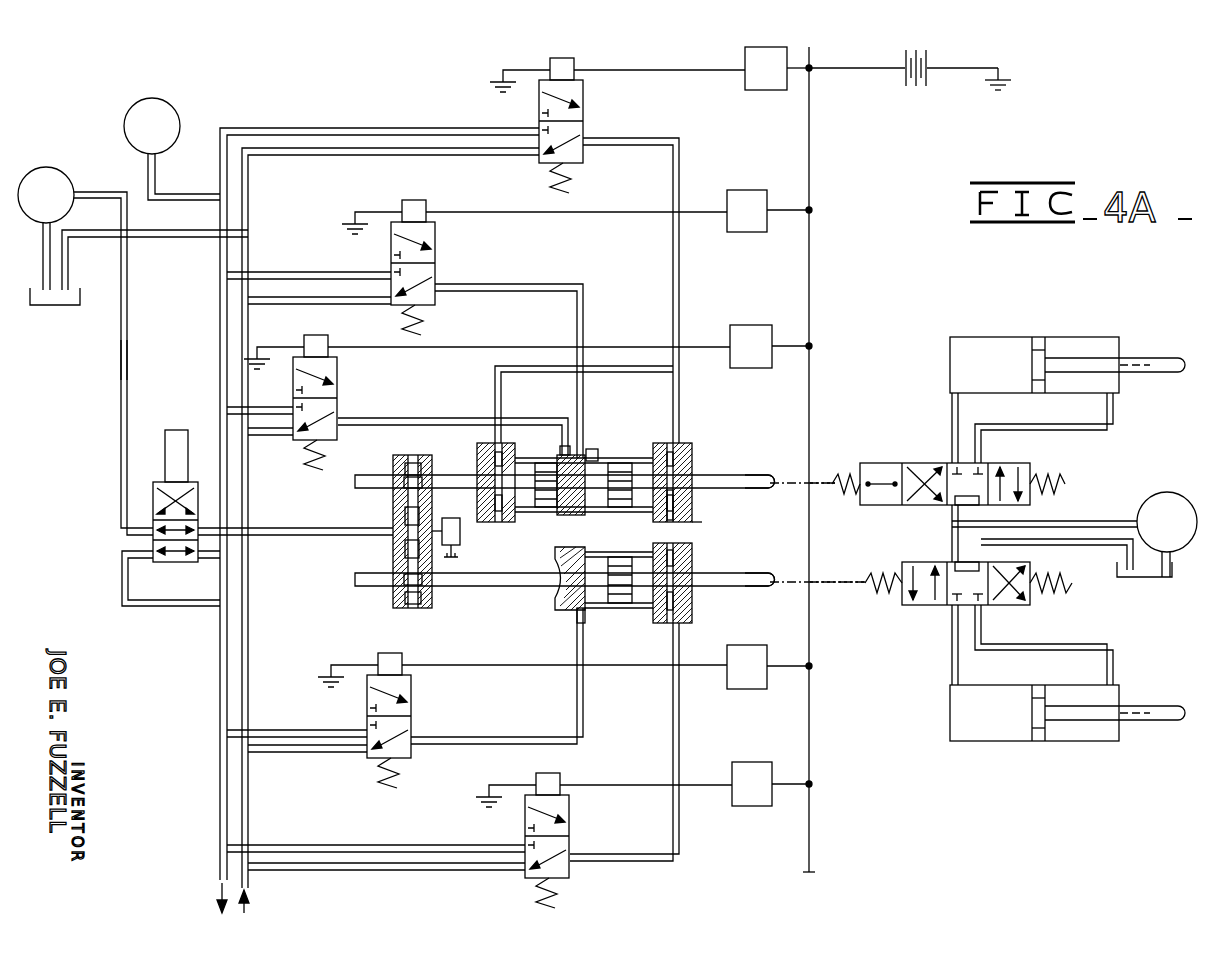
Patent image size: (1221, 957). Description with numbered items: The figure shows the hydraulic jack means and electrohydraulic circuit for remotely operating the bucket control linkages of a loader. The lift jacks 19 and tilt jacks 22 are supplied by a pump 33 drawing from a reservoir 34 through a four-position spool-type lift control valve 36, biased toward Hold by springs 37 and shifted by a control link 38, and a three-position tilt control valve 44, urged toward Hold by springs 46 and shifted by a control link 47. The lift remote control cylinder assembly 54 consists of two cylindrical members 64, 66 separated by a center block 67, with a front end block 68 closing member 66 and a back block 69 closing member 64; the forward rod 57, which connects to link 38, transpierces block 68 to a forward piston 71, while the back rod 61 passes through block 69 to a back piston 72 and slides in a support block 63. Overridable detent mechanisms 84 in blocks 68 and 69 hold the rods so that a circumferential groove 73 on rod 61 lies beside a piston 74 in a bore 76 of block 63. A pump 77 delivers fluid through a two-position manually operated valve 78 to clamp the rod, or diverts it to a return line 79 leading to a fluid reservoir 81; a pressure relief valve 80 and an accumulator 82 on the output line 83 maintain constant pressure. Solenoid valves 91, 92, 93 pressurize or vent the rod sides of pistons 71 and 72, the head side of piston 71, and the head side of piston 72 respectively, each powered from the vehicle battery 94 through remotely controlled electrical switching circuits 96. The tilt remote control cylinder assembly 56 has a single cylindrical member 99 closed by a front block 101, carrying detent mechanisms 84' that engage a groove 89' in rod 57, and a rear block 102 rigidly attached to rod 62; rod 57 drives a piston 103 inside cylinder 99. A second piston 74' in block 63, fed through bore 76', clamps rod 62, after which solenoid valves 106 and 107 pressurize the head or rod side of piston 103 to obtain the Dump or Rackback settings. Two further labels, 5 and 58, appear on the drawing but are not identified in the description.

The upper valve assembly 5 is at (695, 448).
The lift jacks 19 is at (985, 338).
The tilt jacks 22 is at (1000, 742).
The pump 33 is at (1165, 493).
The reservoir 34 is at (1158, 578).
The lift control valve 36 is at (912, 445).
The springs 37 is at (848, 500).
The control link 38 is at (814, 478).
The tilt control valve 44 is at (935, 612).
The springs 46 is at (873, 595).
The control link 47 is at (820, 578).
The lift remote control cylinder assembly 54 is at (704, 530).
The remote control cylinder assembly 56 is at (613, 624).
The forward rod 57 is at (758, 475).
The second actuating rod 58 is at (770, 588).
The back rod 61 is at (456, 476).
The rod 62 is at (440, 592).
The support block 63 is at (420, 612).
The cylindrical member 64 is at (570, 516).
The cylindrical member 66 is at (590, 449).
The center block 67 is at (566, 446).
The front end block 68 is at (694, 500).
The back block 69 is at (492, 441).
The forward piston 71 is at (620, 463).
The back piston 72 is at (548, 463).
The circumferential groove 73 is at (412, 460).
The piston 74 is at (370, 490).
The second piston 74' is at (387, 593).
The bore 76 is at (387, 514).
The bore 76' is at (384, 546).
The pump 77 is at (48, 166).
The manually operated valve 78 is at (166, 562).
The return line 79 is at (243, 486).
The pressure relief valve 80 is at (450, 520).
The fluid reservoir 81 is at (64, 306).
The accumulator 82 is at (170, 104).
The pressurized fluid line 83 is at (127, 355).
The overridable detent mechanisms 84 is at (582, 471).
The detent mechanisms 84' is at (704, 595).
The circumferential groove 89' is at (711, 563).
The solenoid-operated valve 91 is at (586, 112).
The solenoid valve 92 is at (438, 252).
The solenoid valve 93 is at (342, 386).
The vehicle battery 94 is at (905, 75).
The electrical switching circuits 96 is at (760, 92).
The cylindrical member 99 is at (577, 626).
The front block 101 is at (694, 606).
The rear block 102 is at (556, 596).
The piston 103 is at (614, 557).
The solenoid valve 106 is at (414, 710).
The solenoid valve 107 is at (572, 832).